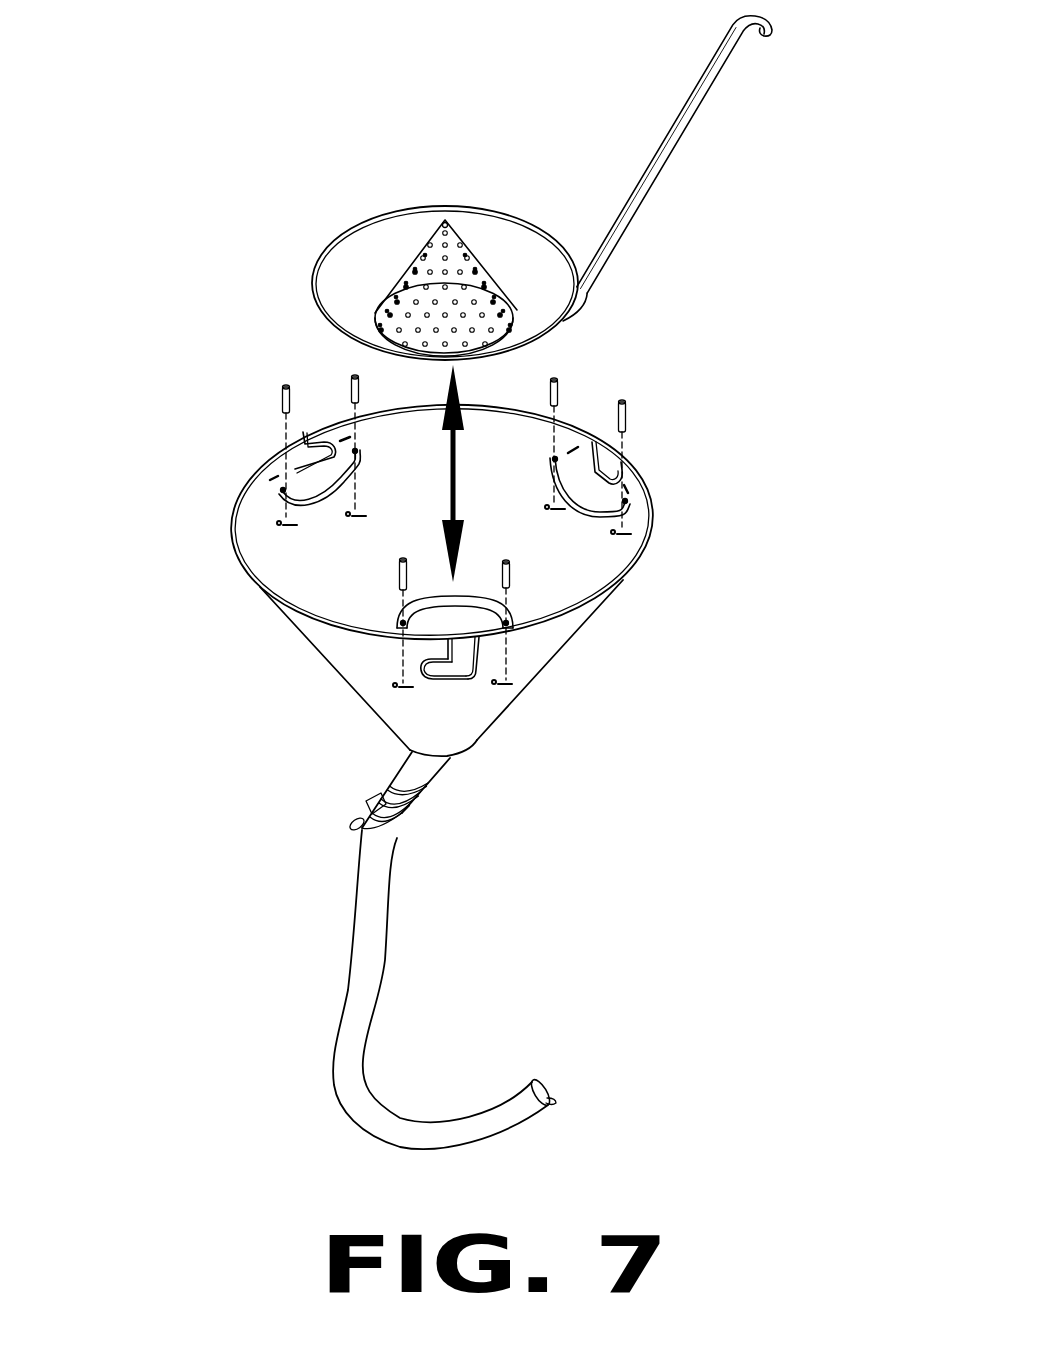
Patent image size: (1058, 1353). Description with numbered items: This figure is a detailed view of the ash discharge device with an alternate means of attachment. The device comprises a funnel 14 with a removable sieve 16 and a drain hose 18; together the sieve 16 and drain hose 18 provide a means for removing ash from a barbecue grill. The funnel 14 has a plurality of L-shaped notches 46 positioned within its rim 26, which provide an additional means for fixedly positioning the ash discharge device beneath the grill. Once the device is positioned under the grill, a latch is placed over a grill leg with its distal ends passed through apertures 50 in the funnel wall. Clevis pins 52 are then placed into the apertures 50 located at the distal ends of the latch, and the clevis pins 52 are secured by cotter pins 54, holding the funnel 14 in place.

The funnel 14 is at (262, 590).
The removable sieve 16 is at (367, 222).
The drain hose 18 is at (373, 948).
The rim 26 is at (650, 527).
The L-shaped notches 46 is at (300, 460).
The apertures 50 is at (400, 662).
The clevis pins 52 is at (457, 667).
The cotter pins 54 is at (508, 573).